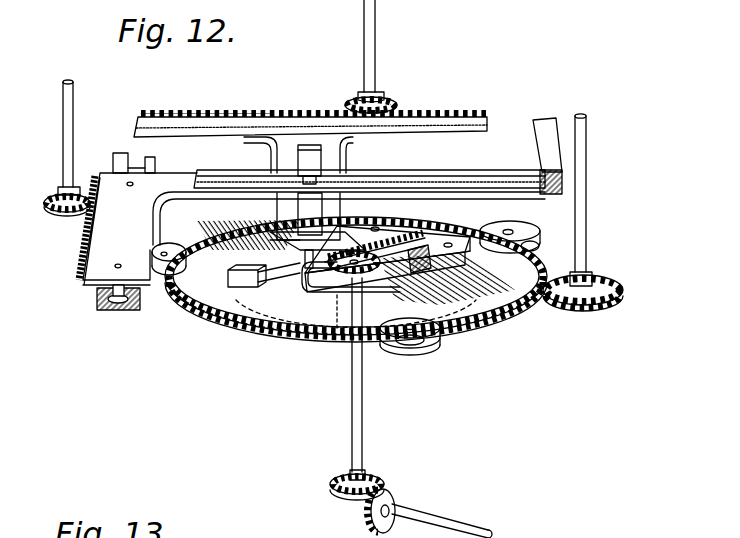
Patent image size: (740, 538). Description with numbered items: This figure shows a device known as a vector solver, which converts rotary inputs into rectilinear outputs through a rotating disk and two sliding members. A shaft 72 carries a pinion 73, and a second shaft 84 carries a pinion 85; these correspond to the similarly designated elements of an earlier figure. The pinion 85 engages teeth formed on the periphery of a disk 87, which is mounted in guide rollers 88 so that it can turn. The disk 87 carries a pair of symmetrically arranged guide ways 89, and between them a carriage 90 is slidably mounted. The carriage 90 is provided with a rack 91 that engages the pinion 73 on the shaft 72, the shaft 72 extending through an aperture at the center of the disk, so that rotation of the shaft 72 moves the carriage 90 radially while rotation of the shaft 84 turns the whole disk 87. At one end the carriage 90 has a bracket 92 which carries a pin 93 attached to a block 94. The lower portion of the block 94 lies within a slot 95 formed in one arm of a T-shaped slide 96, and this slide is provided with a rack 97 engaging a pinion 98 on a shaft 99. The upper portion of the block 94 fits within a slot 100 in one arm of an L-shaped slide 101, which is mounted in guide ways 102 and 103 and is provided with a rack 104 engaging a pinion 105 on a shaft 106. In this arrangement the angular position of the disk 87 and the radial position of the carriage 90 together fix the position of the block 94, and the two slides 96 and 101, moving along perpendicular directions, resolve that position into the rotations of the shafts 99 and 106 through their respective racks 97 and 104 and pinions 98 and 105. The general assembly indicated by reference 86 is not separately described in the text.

The shaft 72 is at (363, 412).
The pinion 73 is at (338, 303).
The shaft 84 is at (583, 202).
The pinion 85 is at (626, 284).
The carriage assembly 86 is at (527, 103).
The disk 87 is at (307, 313).
The guide rollers 88 is at (183, 240).
The guide ways 89 is at (238, 287).
The carriage 90 is at (297, 263).
The rack 91 is at (415, 240).
The bracket 92 is at (285, 272).
The pin 93 is at (312, 212).
The block 94 is at (318, 172).
The slot 95 is at (298, 157).
The T-shaped slide 96 is at (262, 118).
The rack 97 is at (440, 113).
The pinion 98 is at (388, 100).
The shaft 99 is at (376, 48).
The slot 100 is at (415, 178).
The L-shaped slide 101 is at (198, 158).
The guide way 102 is at (548, 122).
The guide way 103 is at (110, 310).
The rack 104 is at (82, 249).
The pinion 105 is at (52, 208).
The shaft 106 is at (64, 137).